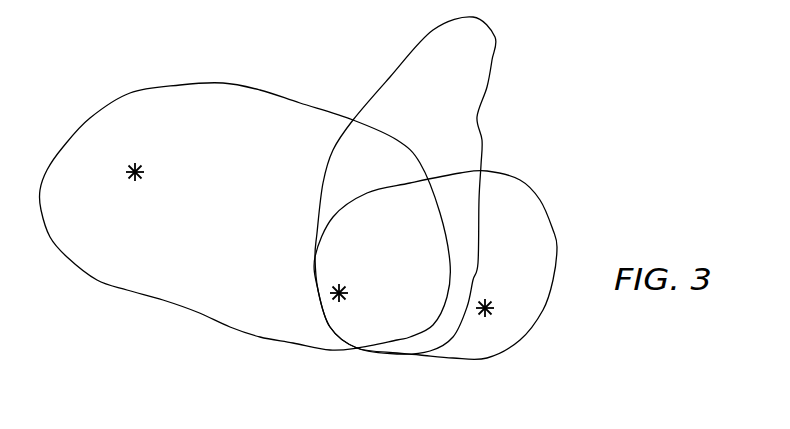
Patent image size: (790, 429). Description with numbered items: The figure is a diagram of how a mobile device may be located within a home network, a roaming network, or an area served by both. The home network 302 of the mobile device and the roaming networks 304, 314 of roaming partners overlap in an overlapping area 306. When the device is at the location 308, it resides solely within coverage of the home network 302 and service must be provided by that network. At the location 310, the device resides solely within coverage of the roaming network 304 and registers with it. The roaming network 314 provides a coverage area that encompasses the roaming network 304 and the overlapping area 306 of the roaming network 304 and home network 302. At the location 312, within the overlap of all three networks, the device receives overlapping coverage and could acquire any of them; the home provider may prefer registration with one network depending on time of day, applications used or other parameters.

The home network 302 is at (82, 110).
The roaming network 304 is at (539, 182).
The overlapping area 306 is at (427, 291).
The location within home network 308 is at (140, 161).
The location within roaming network 310 is at (488, 298).
The location within overlapping networks 312 is at (343, 283).
The roaming network 314 is at (503, 50).